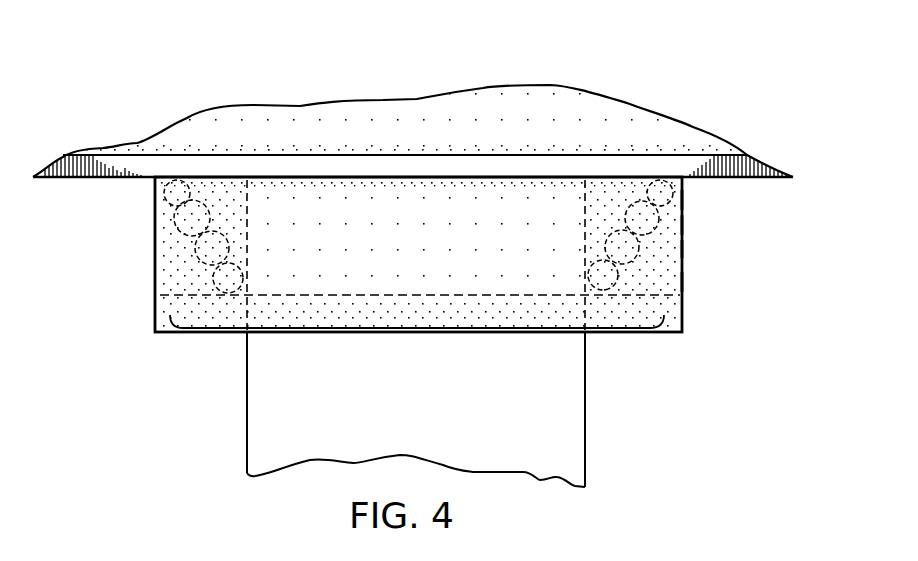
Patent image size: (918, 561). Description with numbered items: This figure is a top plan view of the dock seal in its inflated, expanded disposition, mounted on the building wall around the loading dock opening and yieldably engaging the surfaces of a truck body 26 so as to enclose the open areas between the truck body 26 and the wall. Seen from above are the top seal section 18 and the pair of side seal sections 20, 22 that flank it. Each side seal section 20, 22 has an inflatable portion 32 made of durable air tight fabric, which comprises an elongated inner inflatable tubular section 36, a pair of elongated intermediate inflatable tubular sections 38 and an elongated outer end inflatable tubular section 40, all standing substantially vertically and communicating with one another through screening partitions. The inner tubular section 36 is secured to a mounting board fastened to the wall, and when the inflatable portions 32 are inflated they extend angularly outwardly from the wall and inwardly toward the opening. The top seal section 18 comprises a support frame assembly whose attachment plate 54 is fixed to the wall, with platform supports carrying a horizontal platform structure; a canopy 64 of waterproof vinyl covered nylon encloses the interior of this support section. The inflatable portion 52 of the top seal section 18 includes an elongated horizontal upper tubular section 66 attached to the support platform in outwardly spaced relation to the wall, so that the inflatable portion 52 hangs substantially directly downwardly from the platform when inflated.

The top seal section 18 is at (150, 211).
The side seal section 20 is at (683, 223).
The side seal section 22 is at (242, 324).
The truck body 26 is at (576, 432).
The inflatable portion 32 is at (188, 250).
The inner inflatable tubular section 36 is at (683, 202).
The intermediate inflatable tubular section 38 is at (683, 247).
The outer end inflatable tubular section 40 is at (683, 282).
The inflatable portion 52 is at (683, 305).
The attachment plate 54 is at (563, 177).
The canopy 64 is at (158, 283).
The upper tubular section 66 is at (668, 332).